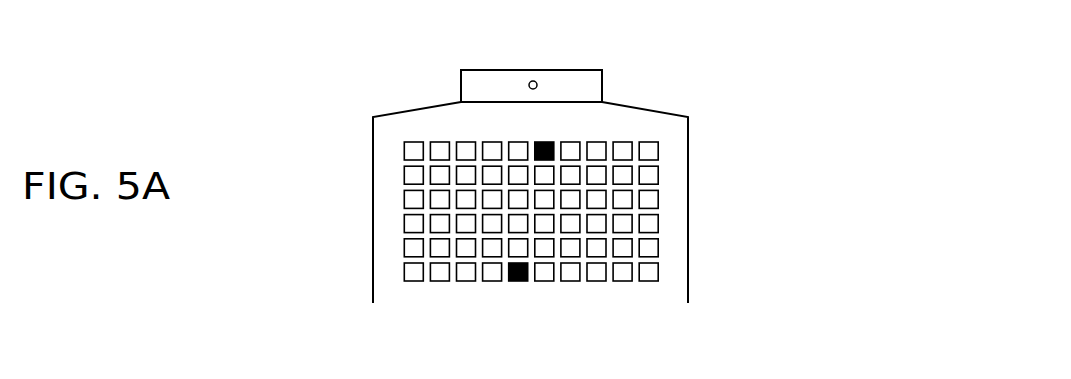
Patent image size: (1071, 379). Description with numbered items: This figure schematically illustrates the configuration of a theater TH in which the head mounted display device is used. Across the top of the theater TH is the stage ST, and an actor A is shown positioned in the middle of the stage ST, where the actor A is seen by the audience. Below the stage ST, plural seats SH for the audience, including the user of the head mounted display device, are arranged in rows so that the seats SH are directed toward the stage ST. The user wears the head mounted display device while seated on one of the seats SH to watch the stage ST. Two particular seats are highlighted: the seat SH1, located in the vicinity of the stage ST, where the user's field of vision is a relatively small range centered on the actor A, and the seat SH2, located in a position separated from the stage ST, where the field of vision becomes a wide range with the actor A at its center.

The actor A is at (538, 83).
The stage ST is at (592, 87).
The seat SH1 is at (548, 142).
The seats SH is at (664, 170).
The theater TH is at (689, 213).
The seat SH2 is at (518, 282).